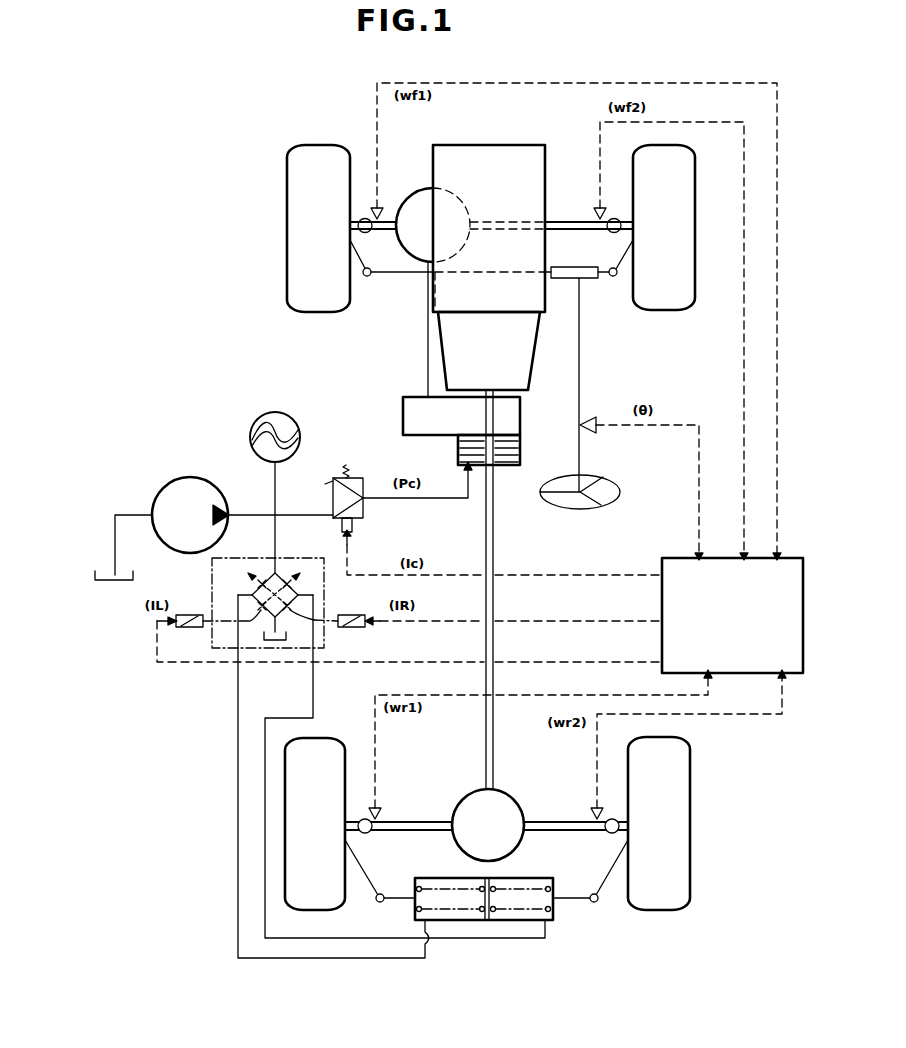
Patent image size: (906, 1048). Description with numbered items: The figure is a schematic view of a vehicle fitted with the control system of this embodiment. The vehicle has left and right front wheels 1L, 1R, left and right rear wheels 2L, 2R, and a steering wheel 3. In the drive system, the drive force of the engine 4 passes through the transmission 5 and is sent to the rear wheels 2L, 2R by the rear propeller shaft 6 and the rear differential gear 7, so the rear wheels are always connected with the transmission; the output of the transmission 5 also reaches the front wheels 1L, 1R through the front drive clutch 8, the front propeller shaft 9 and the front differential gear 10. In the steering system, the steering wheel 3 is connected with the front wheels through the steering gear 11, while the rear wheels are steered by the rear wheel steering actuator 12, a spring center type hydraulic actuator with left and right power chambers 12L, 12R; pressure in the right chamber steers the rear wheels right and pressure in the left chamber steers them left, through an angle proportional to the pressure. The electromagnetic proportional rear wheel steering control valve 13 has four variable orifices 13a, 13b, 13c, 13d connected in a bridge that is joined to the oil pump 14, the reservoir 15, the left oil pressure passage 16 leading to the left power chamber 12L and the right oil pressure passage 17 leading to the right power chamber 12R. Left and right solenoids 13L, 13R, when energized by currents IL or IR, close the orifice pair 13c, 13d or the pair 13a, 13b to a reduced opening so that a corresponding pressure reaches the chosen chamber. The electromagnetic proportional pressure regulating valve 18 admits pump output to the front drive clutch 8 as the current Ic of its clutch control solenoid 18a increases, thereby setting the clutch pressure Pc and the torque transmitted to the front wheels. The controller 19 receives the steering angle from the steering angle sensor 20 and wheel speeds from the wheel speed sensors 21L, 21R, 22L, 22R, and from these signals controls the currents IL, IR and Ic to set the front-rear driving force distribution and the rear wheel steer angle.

The left front wheel 1L is at (302, 147).
The right front wheel 1R is at (690, 160).
The left rear wheel 2L is at (322, 738).
The right rear wheel 2R is at (692, 840).
The steering wheel 3 is at (597, 477).
The engine 4 is at (489, 228).
The transmission 5 is at (489, 351).
The rear propeller shaft 6 is at (485, 532).
The rear differential gear 7 is at (504, 792).
The front drive clutch 8 is at (504, 468).
The front propeller shaft 9 is at (427, 335).
The front differential gear 10 is at (403, 202).
The steering gear 11 is at (578, 267).
The rear wheel steering actuator 12 is at (555, 905).
The left power chamber 12L is at (446, 878).
The right power chamber 12R is at (540, 878).
The rear wheel steering control valve 13 is at (212, 637).
The variable orifice 13a is at (252, 576).
The variable orifice 13b is at (289, 610).
The variable orifice 13c is at (260, 610).
The variable orifice 13d is at (296, 576).
The left solenoid 13L is at (186, 615).
The right solenoid 13R is at (352, 615).
The oil pump 14 is at (190, 477).
The reservoir 15 is at (110, 583).
The left oil pressure passage 16 is at (237, 805).
The right oil pressure passage 17 is at (264, 845).
The pressure regulating valve 18 is at (349, 467).
The clutch control solenoid 18a is at (354, 527).
The controller 19 is at (680, 557).
The steering angle sensor 20 is at (587, 418).
The wheel speed sensor 21L is at (380, 204).
The wheel speed sensor 21R is at (598, 206).
The wheel speed sensor 22L is at (380, 806).
The wheel speed sensor 22R is at (596, 806).